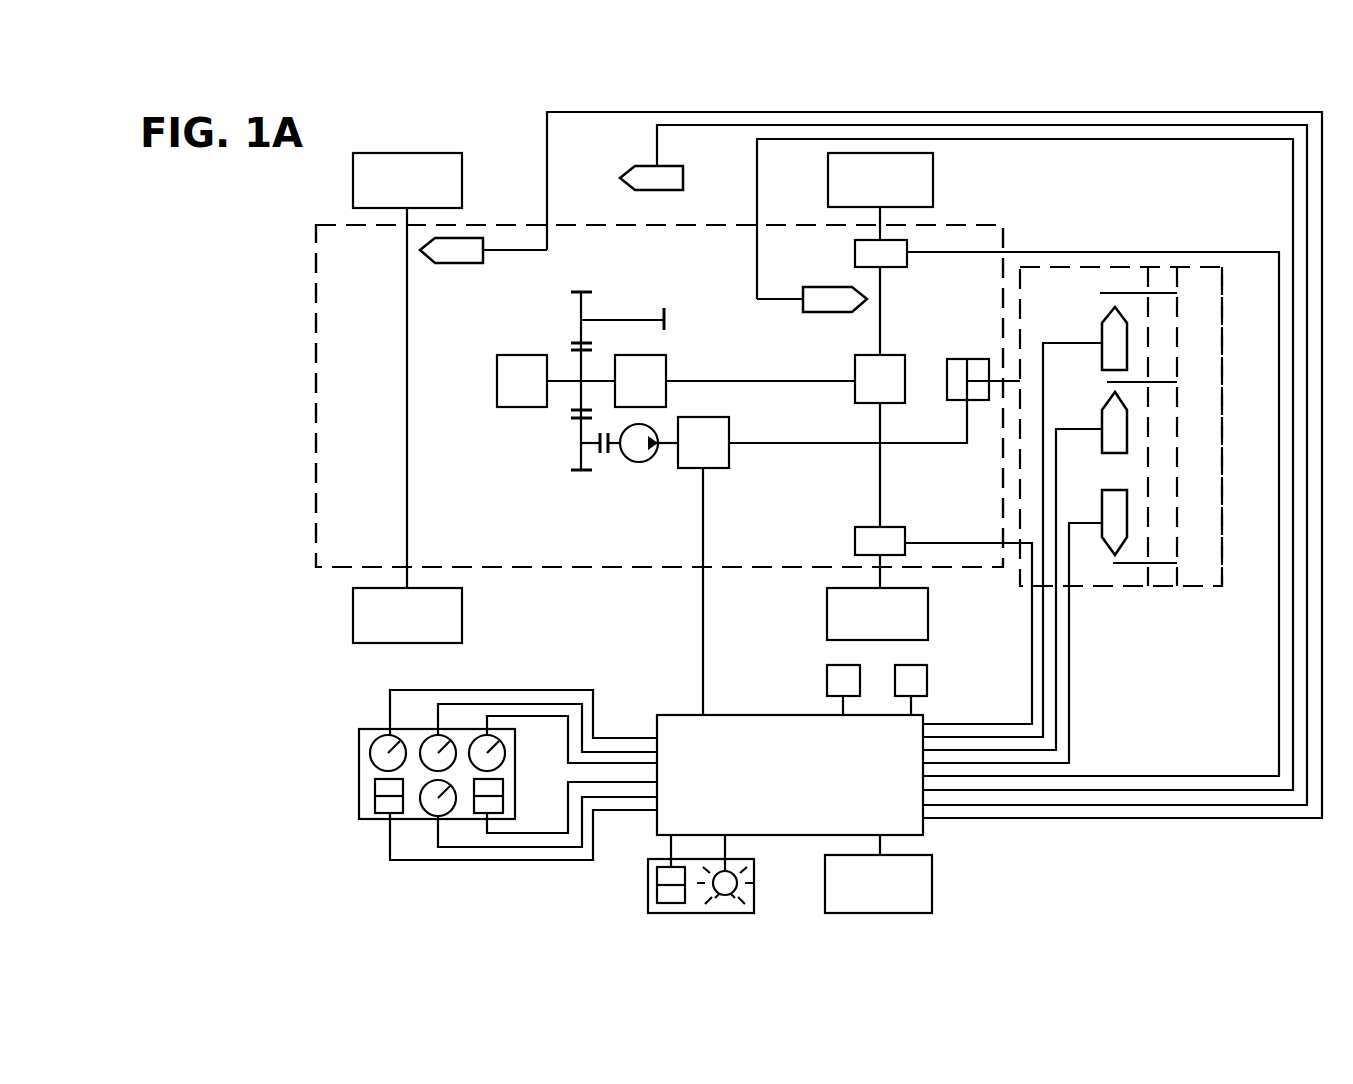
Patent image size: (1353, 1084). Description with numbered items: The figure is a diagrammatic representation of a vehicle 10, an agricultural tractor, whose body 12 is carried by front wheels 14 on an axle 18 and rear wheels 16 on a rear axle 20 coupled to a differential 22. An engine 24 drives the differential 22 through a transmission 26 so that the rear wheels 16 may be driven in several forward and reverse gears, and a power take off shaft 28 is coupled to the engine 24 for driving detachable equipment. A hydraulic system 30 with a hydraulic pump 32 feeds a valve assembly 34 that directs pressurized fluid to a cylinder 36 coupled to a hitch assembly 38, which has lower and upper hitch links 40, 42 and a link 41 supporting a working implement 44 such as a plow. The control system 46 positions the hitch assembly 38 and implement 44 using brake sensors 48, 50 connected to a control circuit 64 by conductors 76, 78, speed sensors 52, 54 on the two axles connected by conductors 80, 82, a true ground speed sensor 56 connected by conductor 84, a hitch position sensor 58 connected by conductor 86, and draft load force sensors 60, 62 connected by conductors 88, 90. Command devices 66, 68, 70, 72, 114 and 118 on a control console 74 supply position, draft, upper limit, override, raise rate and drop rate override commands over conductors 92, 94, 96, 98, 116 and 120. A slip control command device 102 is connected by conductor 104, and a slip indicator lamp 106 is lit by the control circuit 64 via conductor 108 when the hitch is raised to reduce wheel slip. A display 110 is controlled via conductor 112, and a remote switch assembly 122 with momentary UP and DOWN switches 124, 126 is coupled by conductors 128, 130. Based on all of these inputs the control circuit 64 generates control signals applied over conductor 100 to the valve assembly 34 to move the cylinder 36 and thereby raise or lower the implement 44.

The vehicle 10 is at (284, 257).
The body 12 is at (316, 398).
The front wheels 14 is at (373, 153).
The rear wheels 16 is at (828, 190).
The axle 18 is at (407, 317).
The rear axle 20 is at (880, 487).
The differential 22 is at (890, 355).
The engine 24 is at (515, 355).
The transmission 26 is at (666, 362).
The power take off shaft 28 is at (625, 318).
The hydraulic system 30 is at (612, 475).
The hydraulic pump 32 is at (633, 462).
The valve assembly 34 is at (720, 417).
The cylinder 36 is at (958, 358).
The hitch assembly 38 is at (1057, 267).
The lower hitch link 40 is at (1160, 293).
The link 41 is at (1163, 565).
The upper hitch link 42 is at (1160, 382).
The working implement 44 is at (1210, 263).
The control system 46 is at (590, 895).
The brake sensor 48 is at (855, 262).
The brake sensor 50 is at (855, 547).
The speed sensor 52 is at (462, 263).
The speed sensor 54 is at (830, 312).
The true ground speed sensor 56 is at (650, 190).
The hitch position sensor 58 is at (1127, 447).
The draft load force sensor 60 is at (1127, 345).
The draft load force sensor 62 is at (1127, 523).
The control circuit 64 is at (675, 712).
The command device 66 is at (422, 735).
The command device 68 is at (470, 735).
The command device 70 is at (418, 820).
The command device 72 is at (465, 822).
The control console 74 is at (367, 728).
The conductor 76 is at (1110, 252).
The conductor 78 is at (985, 543).
The conductor 80 is at (547, 157).
The conductor 82 is at (757, 210).
The conductor 84 is at (657, 133).
The conductor 86 is at (1057, 678).
The conductor 88 is at (1042, 710).
The conductor 90 is at (1069, 648).
The conductor 92 is at (560, 704).
The conductor 94 is at (610, 763).
The conductor 96 is at (527, 847).
The conductor 98 is at (617, 783).
The conductor 100 is at (703, 615).
The command device 102 is at (648, 895).
The conductor 104 is at (648, 865).
The lamp 106 is at (740, 883).
The conductor 108 is at (730, 850).
The display 110 is at (932, 880).
The conductor 112 is at (880, 845).
The command device 114 is at (372, 753).
The conductor 116 is at (593, 700).
The command device 118 is at (375, 795).
The conductor 120 is at (568, 860).
The remote switch assembly 122 is at (945, 708).
The remote momentary switch 124 is at (835, 665).
The remote momentary switch 126 is at (915, 665).
The conductor 128 is at (843, 705).
The conductor 130 is at (911, 706).